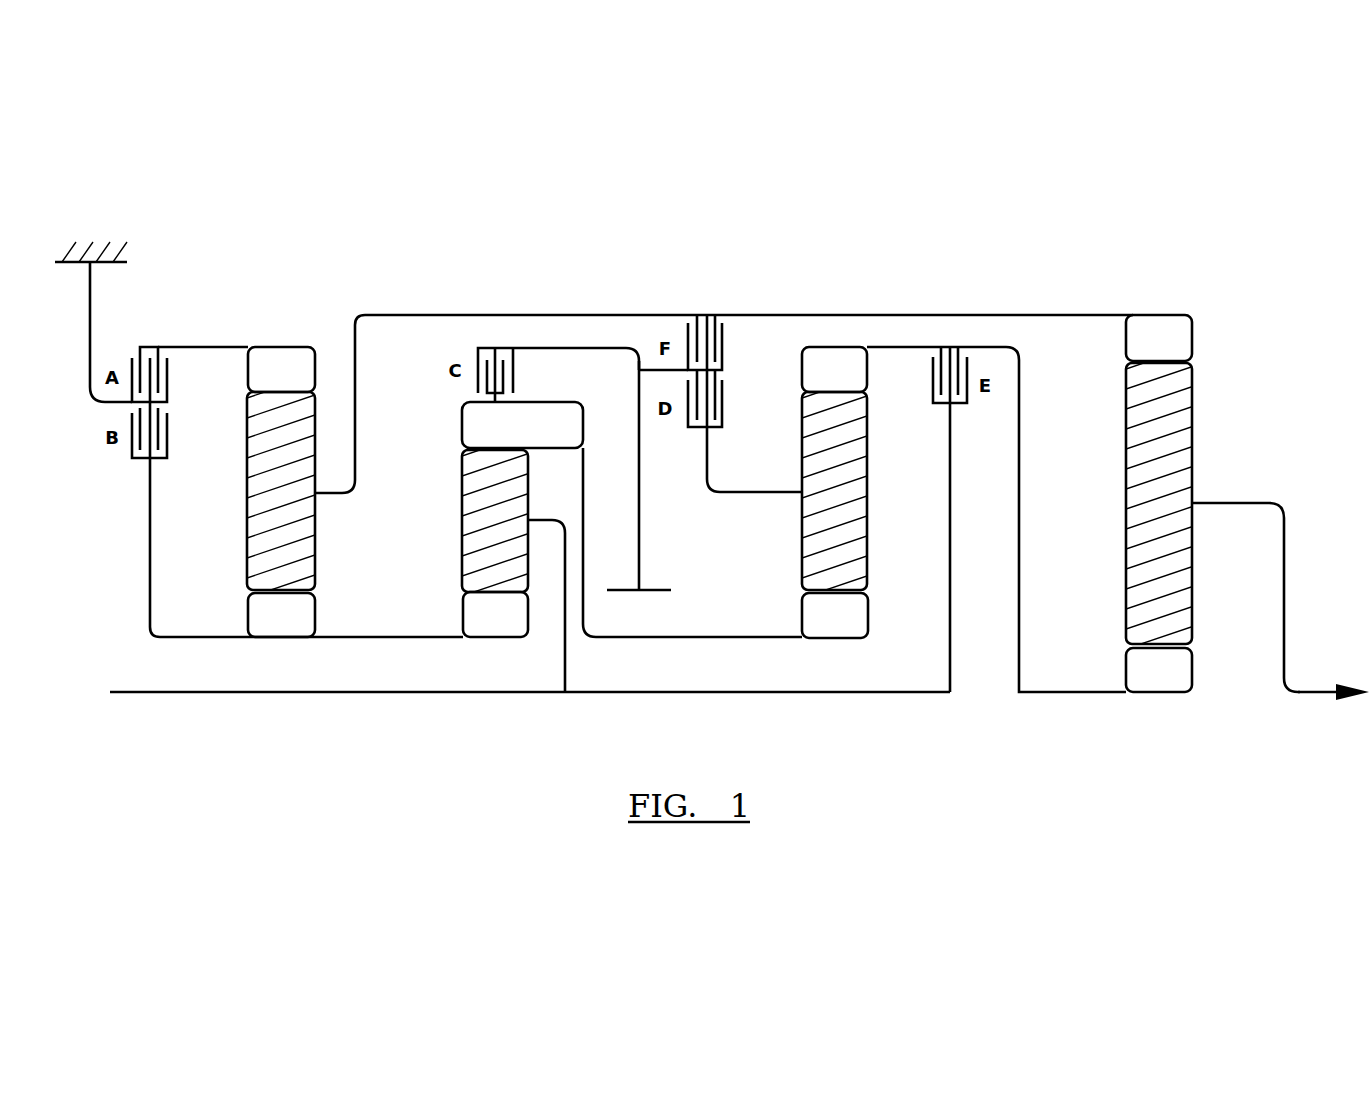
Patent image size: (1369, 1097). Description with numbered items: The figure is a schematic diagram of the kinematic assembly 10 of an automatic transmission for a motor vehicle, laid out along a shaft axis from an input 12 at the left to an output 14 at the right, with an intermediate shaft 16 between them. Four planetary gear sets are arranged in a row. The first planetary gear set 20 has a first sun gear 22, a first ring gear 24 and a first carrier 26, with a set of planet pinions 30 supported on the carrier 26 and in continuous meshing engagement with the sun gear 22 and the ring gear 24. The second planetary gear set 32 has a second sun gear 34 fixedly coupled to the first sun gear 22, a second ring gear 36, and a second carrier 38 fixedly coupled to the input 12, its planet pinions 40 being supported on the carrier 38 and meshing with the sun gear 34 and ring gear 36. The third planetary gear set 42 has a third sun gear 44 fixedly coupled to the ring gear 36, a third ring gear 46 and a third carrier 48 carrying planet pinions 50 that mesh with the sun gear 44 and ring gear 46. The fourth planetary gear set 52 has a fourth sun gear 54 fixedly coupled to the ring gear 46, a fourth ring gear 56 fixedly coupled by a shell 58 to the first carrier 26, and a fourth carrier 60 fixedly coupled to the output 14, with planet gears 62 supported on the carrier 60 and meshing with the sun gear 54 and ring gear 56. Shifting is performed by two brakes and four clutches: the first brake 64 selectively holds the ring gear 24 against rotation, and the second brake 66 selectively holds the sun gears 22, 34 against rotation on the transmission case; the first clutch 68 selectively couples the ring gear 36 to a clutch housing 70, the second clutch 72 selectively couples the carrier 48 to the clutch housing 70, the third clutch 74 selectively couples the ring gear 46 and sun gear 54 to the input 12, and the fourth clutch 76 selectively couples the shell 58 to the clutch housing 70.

The assembly 10 is at (1128, 258).
The input 12 is at (408, 694).
The output 14 is at (1312, 694).
The intermediate shaft 16 is at (700, 637).
The first planetary gear set 20 is at (283, 652).
The first sun gear 22 is at (250, 607).
The first ring gear 24 is at (299, 346).
The first carrier 26 is at (328, 495).
The planet pinions 30 is at (263, 515).
The second planetary gear set 32 is at (496, 652).
The second sun gear 34 is at (467, 605).
The second ring gear 36 is at (470, 425).
The second carrier 38 is at (530, 520).
The planet pinions 40 is at (480, 515).
The third planetary gear set 42 is at (838, 652).
The third sun gear 44 is at (860, 617).
The third ring gear 46 is at (802, 372).
The third carrier 48 is at (748, 494).
The planet pinions 50 is at (860, 500).
The fourth planetary gear set 52 is at (1124, 716).
The fourth sun gear 54 is at (1126, 665).
The fourth ring gear 56 is at (1126, 340).
The shell 58 is at (893, 315).
The fourth carrier 60 is at (1247, 503).
The planet gears 62 is at (1145, 502).
The first brake 64 is at (168, 379).
The second brake 66 is at (167, 437).
The first clutch 68 is at (513, 364).
The clutch housing 70 is at (639, 523).
The second clutch 72 is at (722, 390).
The third clutch 74 is at (967, 367).
The fourth clutch 76 is at (722, 336).